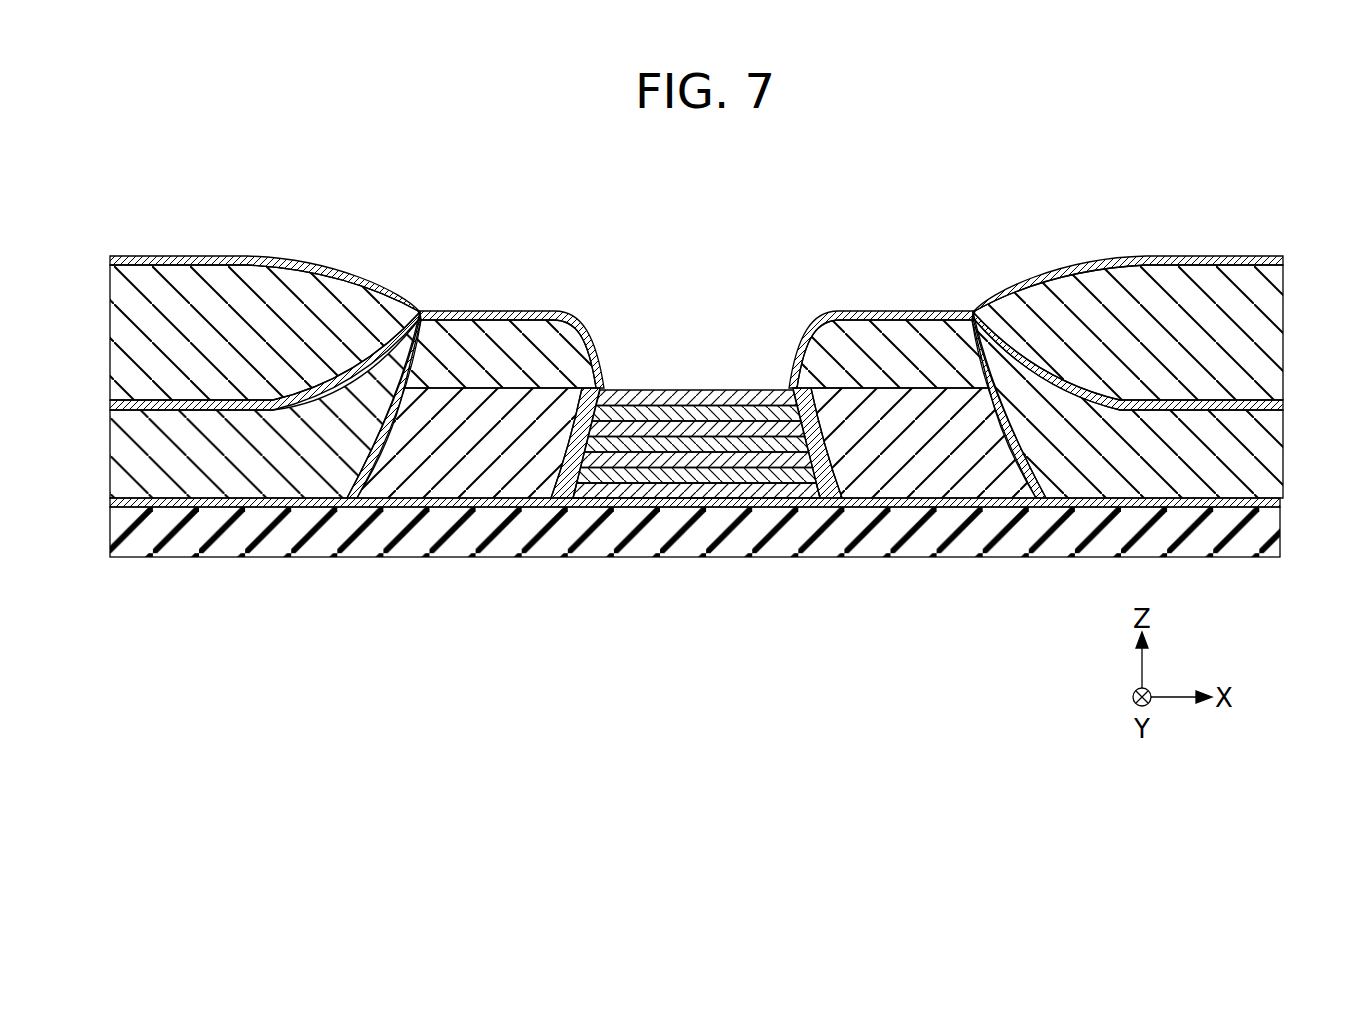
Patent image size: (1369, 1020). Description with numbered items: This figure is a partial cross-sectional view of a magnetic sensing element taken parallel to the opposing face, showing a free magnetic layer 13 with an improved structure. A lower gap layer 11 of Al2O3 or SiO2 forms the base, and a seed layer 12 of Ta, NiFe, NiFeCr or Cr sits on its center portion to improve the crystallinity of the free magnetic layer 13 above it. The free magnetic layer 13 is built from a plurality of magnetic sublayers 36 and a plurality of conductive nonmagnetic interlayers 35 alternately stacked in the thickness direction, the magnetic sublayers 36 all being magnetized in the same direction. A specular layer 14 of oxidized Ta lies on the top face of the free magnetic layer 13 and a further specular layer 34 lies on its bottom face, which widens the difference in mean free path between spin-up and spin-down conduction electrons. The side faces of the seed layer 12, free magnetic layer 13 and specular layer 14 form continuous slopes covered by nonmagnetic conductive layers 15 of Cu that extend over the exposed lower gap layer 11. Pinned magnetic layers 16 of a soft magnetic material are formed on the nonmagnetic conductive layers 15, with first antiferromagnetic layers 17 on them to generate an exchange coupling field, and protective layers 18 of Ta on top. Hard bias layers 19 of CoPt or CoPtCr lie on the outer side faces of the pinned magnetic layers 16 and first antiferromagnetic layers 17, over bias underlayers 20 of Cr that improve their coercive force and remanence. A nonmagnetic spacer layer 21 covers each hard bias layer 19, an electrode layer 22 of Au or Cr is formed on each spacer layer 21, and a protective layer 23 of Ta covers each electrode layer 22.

The lower gap layer 11 is at (235, 538).
The seed layer 12 is at (627, 500).
The free magnetic layer 13 is at (770, 482).
The specular layer 14 is at (618, 390).
The nonmagnetic conductive layer 15 is at (548, 497).
The pinned magnetic layer 16 is at (443, 470).
The first antiferromagnetic layer 17 is at (505, 350).
The protective layer 18 is at (440, 312).
The hard bias layer 19 is at (130, 460).
The bias underlayer 20 is at (110, 503).
The spacer layer 21 is at (110, 403).
The electrode layer 22 is at (130, 314).
The protective layer 23 is at (110, 260).
The specular layer 34 is at (694, 485).
The conductive nonmagnetic interlayer 35 is at (706, 475).
The magnetic sublayer 36 is at (766, 490).